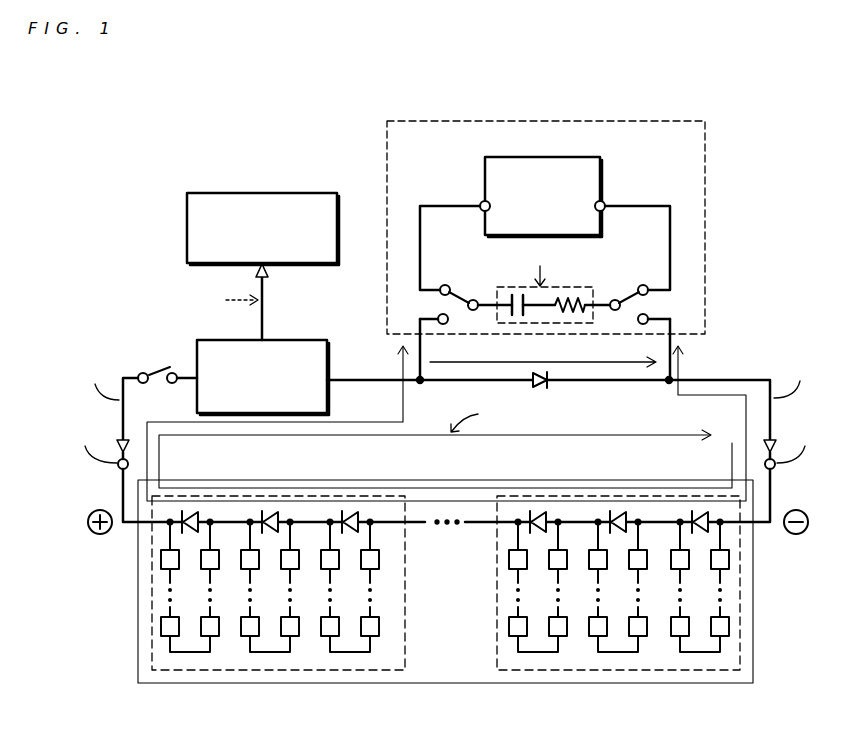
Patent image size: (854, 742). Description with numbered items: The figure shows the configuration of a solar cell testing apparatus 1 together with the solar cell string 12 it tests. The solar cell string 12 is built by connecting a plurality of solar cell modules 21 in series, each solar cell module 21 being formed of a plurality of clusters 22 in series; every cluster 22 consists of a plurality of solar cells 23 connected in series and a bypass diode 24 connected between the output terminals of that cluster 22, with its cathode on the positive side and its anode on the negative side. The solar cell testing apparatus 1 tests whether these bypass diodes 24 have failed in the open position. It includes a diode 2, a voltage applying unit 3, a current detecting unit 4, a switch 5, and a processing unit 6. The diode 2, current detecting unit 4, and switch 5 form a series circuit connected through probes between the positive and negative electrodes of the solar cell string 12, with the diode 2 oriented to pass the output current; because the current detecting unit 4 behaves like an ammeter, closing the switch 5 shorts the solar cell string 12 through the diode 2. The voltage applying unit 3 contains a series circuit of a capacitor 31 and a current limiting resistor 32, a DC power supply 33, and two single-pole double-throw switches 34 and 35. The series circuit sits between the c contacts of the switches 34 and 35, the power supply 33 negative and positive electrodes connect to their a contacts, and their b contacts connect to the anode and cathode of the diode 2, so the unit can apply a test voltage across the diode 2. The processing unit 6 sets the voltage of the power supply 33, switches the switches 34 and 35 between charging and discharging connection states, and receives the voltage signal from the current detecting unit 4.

The solar cell testing apparatus 1 is at (345, 108).
The diode 2 is at (541, 389).
The voltage applying unit 3 is at (702, 119).
The current detecting unit 4 is at (287, 340).
The switch 5 is at (158, 368).
The processing unit 6 is at (283, 193).
The solar cell string 12 is at (765, 617).
The solar cell module 21 is at (491, 663).
The cluster 22 is at (194, 666).
The solar cell 23 is at (160, 560).
The bypass diode 24 is at (189, 512).
The capacitor 31 is at (516, 296).
The current limiting resistor 32 is at (571, 298).
The power supply 33 is at (558, 157).
The switch 34 is at (455, 296).
The switch 35 is at (637, 290).